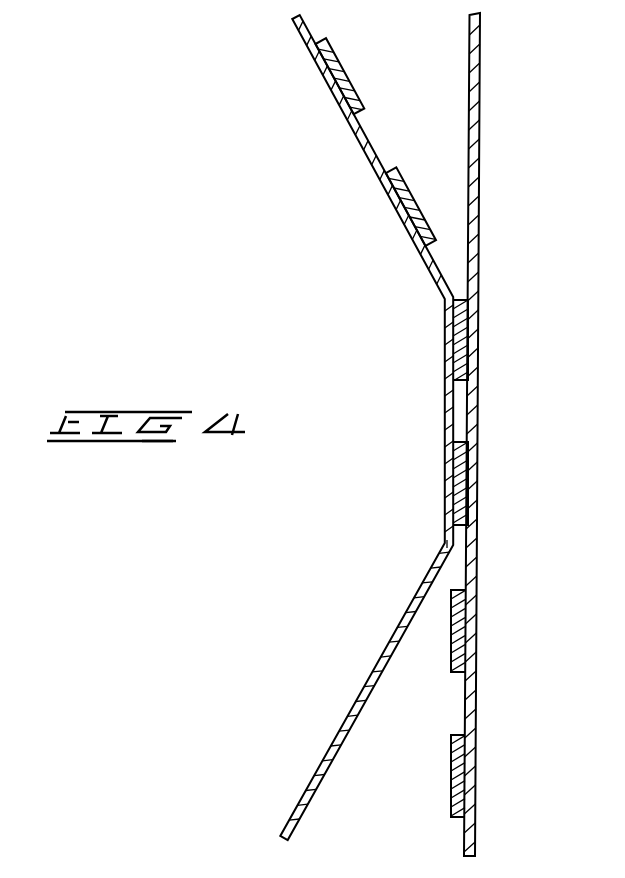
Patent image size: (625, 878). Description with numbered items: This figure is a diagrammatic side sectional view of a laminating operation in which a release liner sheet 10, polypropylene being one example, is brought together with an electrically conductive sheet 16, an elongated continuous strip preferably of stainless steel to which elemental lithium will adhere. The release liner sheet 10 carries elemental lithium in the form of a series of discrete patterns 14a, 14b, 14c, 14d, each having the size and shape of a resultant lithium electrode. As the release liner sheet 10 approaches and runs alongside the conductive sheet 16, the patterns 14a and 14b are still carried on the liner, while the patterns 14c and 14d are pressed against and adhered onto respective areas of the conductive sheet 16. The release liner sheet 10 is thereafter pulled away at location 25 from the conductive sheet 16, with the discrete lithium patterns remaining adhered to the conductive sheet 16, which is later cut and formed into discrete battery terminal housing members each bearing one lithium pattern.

The release liner sheet 10 is at (362, 153).
The electrically conductive sheet 16 is at (480, 116).
The discrete lithium pattern 14a is at (340, 72).
The discrete lithium pattern 14b is at (410, 192).
The discrete lithium pattern 14c is at (458, 334).
The discrete lithium pattern 14d is at (458, 485).
The location 25 is at (404, 530).